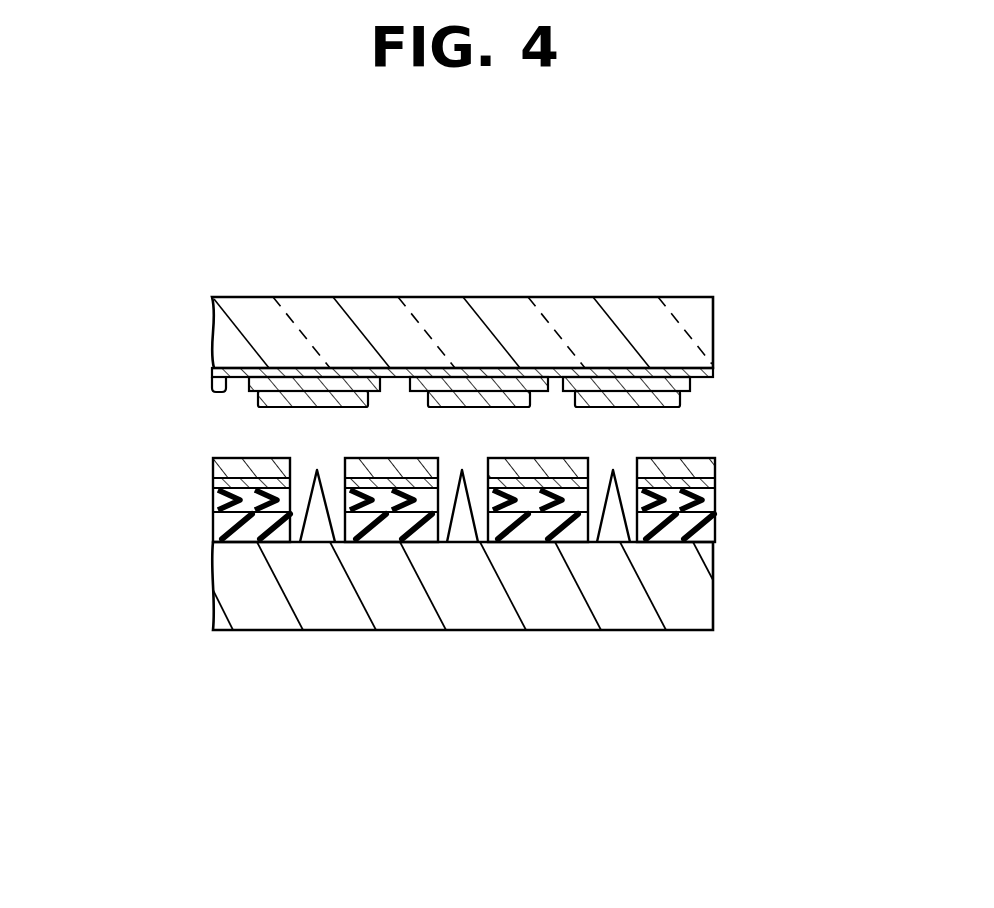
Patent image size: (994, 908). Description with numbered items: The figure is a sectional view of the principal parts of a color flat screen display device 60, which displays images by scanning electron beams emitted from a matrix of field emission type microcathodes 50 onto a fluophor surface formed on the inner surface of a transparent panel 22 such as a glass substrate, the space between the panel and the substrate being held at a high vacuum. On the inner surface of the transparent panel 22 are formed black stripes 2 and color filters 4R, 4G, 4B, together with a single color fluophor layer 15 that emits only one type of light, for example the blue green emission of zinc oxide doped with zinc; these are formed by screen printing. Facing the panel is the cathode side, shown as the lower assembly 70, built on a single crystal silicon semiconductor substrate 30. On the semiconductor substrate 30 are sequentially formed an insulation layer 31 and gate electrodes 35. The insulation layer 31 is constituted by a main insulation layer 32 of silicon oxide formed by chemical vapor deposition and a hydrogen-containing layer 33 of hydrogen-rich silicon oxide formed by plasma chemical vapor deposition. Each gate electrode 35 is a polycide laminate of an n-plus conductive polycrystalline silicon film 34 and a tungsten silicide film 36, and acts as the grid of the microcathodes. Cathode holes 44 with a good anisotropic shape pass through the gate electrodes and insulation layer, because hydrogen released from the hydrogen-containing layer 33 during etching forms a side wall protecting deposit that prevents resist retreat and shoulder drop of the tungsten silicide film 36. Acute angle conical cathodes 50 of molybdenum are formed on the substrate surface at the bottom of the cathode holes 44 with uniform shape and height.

The black stripes 2 is at (236, 376).
The red color filter 4R is at (305, 382).
The green color filter 4G is at (486, 380).
The blue color filter 4B is at (640, 380).
The single color fluophor layer 15 is at (354, 370).
The transparent panel 22 is at (665, 323).
The color flat screen display device 60 is at (608, 282).
The semiconductor substrate 30 is at (646, 604).
The insulation layer 31 is at (371, 509).
The main insulation layer 32 is at (410, 538).
The hydrogen-containing layer 33 is at (215, 500).
The polycrystalline silicon film 34 is at (520, 497).
The gate electrode 35 is at (560, 469).
The tungsten silicide film 36 is at (715, 465).
The cathode hole 44 is at (470, 528).
The microcathode 50 is at (316, 528).
The active matrix substrate assembly 70 is at (243, 664).